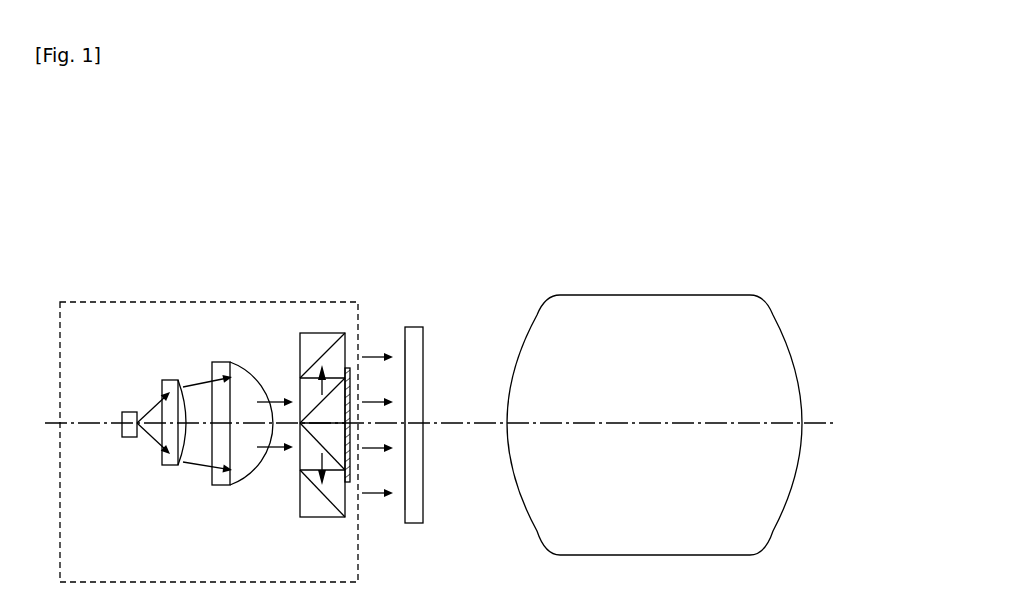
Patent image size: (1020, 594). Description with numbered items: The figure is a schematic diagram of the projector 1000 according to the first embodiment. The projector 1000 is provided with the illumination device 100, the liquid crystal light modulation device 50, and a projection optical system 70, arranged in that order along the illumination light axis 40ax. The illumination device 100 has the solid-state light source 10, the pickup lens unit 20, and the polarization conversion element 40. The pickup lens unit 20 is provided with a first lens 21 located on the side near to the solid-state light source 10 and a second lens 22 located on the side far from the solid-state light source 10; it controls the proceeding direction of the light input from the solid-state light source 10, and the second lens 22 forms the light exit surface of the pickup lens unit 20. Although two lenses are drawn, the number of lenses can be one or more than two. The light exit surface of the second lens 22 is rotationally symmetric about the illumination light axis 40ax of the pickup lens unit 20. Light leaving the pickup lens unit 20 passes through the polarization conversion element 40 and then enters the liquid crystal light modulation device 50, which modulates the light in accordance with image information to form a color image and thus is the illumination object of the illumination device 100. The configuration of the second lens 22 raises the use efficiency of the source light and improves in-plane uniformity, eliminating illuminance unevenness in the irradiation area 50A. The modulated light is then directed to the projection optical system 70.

The projector 1000 is at (661, 150).
The illumination device 100 is at (203, 302).
The solid-state light source 10 is at (137, 439).
The pickup lens unit 20 is at (269, 526).
The first lens 21 is at (171, 467).
The second lens 22 is at (248, 458).
The polarization conversion element 40 is at (315, 510).
The illumination light axis 40ax is at (818, 427).
The liquid crystal light modulation device 50 is at (416, 327).
The irradiation area 50A is at (405, 503).
The projection optical system 70 is at (696, 295).